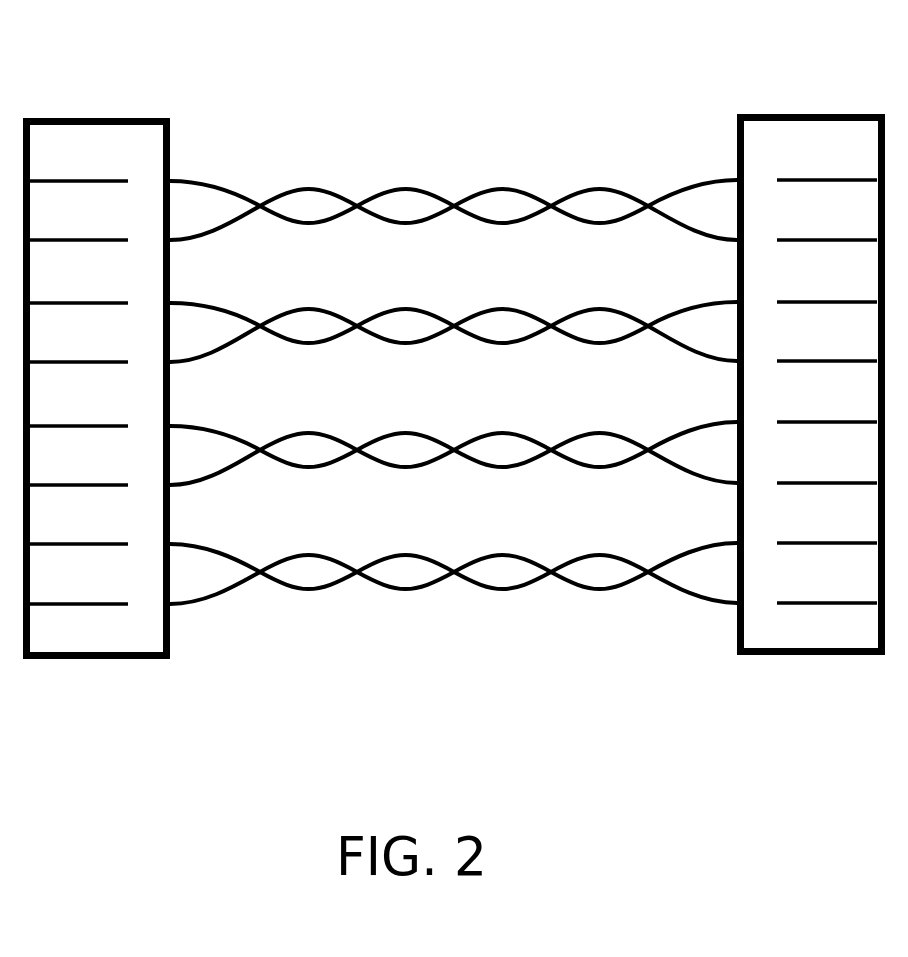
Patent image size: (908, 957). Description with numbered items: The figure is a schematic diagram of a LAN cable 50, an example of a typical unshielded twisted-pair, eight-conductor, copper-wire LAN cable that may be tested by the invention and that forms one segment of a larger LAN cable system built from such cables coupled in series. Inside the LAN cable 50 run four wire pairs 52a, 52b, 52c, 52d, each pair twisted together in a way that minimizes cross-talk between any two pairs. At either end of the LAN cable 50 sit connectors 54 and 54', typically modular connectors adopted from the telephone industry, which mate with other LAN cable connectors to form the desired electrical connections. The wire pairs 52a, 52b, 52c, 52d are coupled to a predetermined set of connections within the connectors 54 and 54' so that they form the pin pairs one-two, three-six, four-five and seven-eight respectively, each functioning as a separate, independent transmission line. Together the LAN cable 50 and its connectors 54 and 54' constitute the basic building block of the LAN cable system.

The LAN cable 50 is at (433, 30).
The connector 54 is at (97, 353).
The connector 54' is at (797, 350).
The wire pair 52a is at (460, 199).
The wire pair 52b is at (459, 320).
The wire pair 52c is at (463, 442).
The wire pair 52d is at (467, 561).